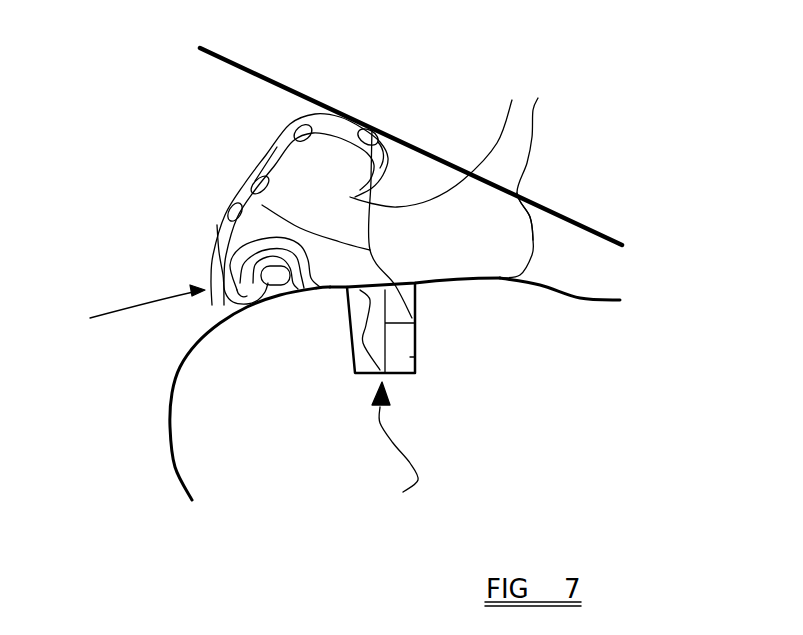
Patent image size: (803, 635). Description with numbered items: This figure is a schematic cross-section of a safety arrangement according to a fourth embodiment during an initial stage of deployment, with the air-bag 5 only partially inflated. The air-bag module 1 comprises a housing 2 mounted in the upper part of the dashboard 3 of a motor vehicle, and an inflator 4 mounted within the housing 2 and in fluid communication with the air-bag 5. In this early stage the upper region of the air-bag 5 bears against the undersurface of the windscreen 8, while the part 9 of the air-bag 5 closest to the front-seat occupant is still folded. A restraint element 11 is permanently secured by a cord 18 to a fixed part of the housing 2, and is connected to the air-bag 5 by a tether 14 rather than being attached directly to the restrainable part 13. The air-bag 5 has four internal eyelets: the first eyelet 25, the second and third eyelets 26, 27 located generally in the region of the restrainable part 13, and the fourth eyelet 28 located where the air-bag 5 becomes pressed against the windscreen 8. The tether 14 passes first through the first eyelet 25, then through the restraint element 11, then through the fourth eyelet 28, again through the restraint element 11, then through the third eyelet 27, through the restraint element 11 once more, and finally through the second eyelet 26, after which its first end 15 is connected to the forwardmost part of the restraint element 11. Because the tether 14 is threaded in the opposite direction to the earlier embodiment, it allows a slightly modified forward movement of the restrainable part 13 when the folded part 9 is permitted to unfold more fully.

The air-bag module 1 is at (395, 445).
The housing 2 is at (355, 375).
The dashboard 3 is at (170, 407).
The inflator 4 is at (410, 357).
The air-bag 5 is at (531, 253).
The windscreen 8 is at (560, 213).
The folded part of the air-bag 9 is at (131, 315).
The restraint element 11 is at (400, 195).
The restrainable part of the air-bag 13 is at (277, 147).
The tether 14 is at (215, 245).
The first end of the tether 15 is at (243, 177).
The cord 18 is at (527, 163).
The first eyelet 25 is at (237, 223).
The second eyelet 26 is at (250, 177).
The third eyelet 27 is at (288, 123).
The fourth eyelet 28 is at (357, 140).